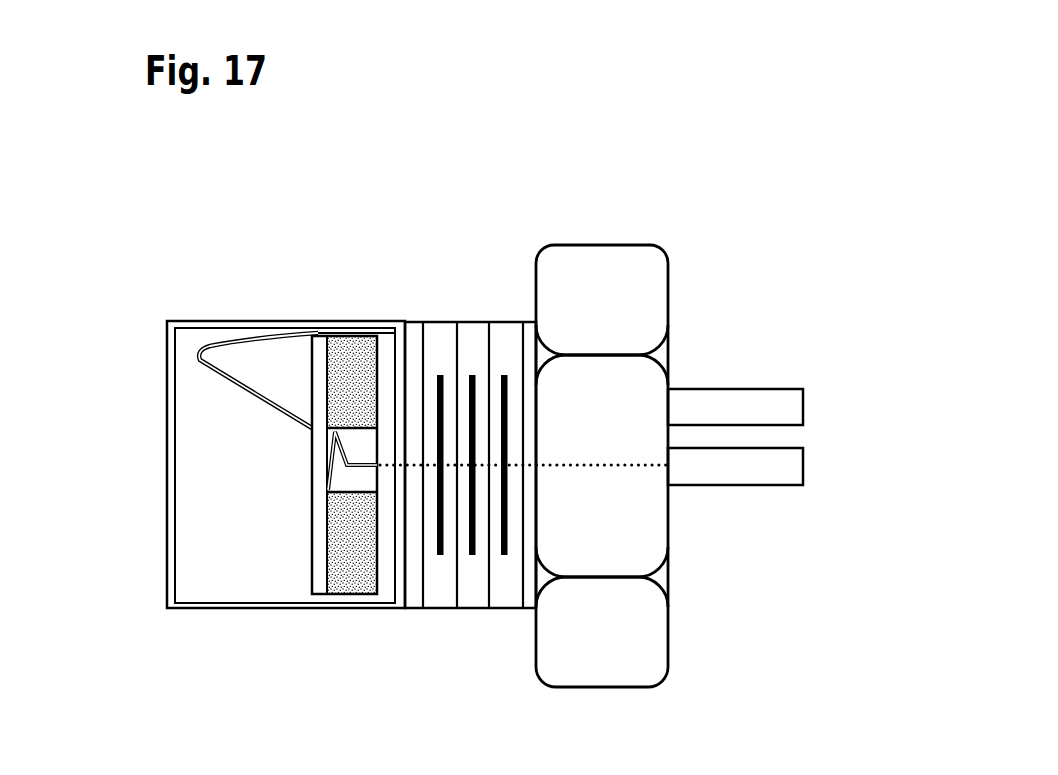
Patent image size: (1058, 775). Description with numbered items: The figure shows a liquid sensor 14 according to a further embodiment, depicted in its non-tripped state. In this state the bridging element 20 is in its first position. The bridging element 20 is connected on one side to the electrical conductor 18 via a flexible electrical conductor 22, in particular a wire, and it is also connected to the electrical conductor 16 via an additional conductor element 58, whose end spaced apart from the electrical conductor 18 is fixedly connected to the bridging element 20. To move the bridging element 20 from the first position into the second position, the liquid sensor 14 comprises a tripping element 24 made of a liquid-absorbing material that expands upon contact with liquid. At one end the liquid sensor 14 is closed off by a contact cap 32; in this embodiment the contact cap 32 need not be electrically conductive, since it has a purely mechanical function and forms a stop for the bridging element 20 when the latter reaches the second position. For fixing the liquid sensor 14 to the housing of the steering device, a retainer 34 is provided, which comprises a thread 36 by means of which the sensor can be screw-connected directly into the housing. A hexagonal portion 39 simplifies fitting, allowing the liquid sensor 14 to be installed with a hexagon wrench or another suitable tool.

The liquid sensor 14 is at (716, 380).
The electrical conductor 16 is at (792, 467).
The electrical conductor 18 is at (792, 403).
The bridging element 20 is at (318, 348).
The flexible electrical conductor 22 is at (233, 338).
The tripping element 24 is at (349, 382).
The contact cap 32 is at (168, 438).
The retainer 34 is at (443, 333).
The thread 36 is at (473, 377).
The hexagonal portion 39 is at (585, 257).
The conductor element 58 is at (363, 467).